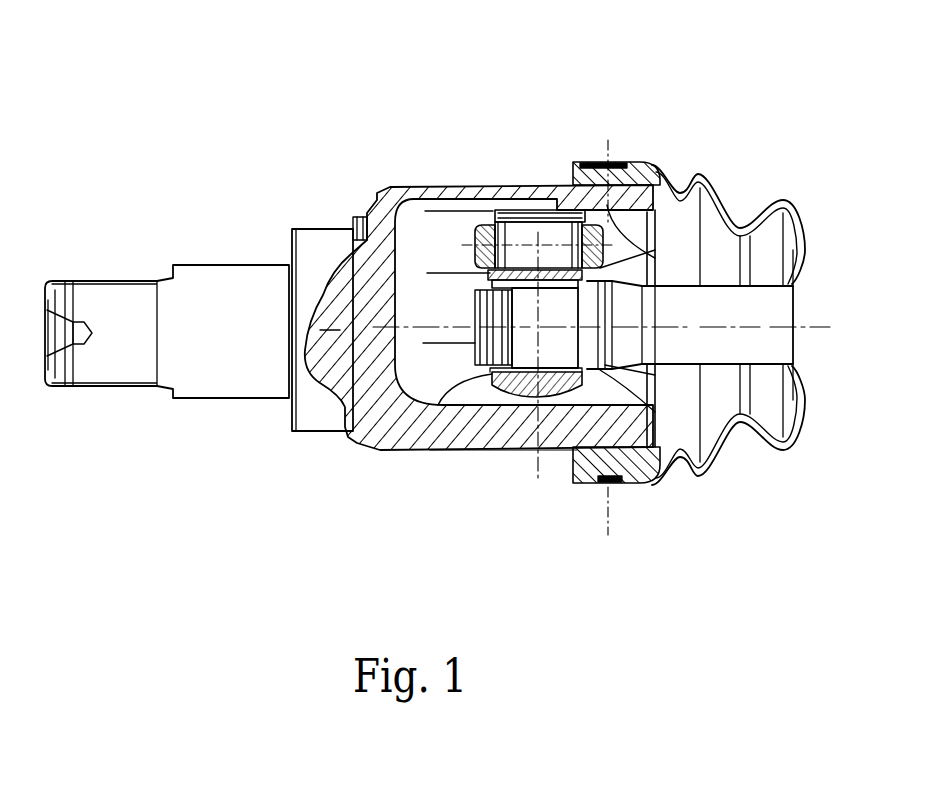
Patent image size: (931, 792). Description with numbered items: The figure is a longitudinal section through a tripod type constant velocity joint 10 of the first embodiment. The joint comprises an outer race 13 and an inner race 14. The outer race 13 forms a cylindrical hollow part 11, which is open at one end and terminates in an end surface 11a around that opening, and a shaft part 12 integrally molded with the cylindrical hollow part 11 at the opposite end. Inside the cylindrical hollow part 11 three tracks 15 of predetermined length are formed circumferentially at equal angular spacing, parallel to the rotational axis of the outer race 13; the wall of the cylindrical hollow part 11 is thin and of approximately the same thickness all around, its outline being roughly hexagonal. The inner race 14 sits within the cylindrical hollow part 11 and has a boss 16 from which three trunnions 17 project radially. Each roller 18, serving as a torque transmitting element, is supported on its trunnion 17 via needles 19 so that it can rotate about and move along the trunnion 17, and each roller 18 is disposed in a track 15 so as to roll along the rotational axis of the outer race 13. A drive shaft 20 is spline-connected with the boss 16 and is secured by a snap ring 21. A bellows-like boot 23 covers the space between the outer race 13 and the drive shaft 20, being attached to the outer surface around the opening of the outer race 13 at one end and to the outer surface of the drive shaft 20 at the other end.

The tripod type constant velocity joint 10 is at (430, 148).
The cylindrical hollow part 11 is at (408, 187).
The end surface 11a is at (677, 450).
The shaft part 12 is at (213, 282).
The outer race 13 is at (366, 189).
The inner race 14 is at (523, 396).
The track 15 is at (452, 223).
The boss 16 is at (552, 447).
The trunnion 17 is at (527, 232).
The roller 18 is at (643, 162).
The needles 19 is at (560, 193).
The drive shaft 20 is at (705, 303).
The snap ring 21 is at (440, 410).
The boot 23 is at (786, 450).